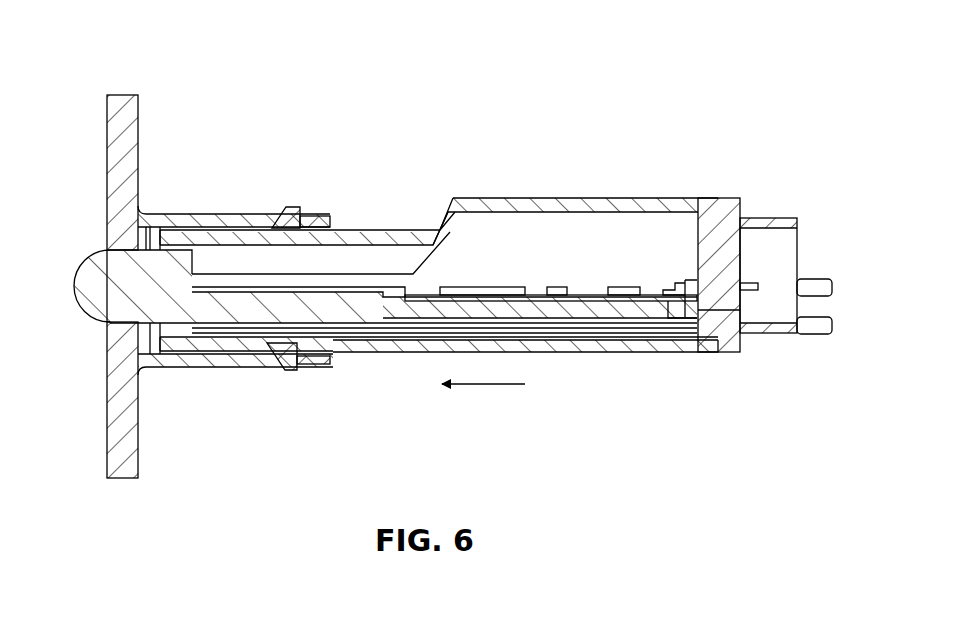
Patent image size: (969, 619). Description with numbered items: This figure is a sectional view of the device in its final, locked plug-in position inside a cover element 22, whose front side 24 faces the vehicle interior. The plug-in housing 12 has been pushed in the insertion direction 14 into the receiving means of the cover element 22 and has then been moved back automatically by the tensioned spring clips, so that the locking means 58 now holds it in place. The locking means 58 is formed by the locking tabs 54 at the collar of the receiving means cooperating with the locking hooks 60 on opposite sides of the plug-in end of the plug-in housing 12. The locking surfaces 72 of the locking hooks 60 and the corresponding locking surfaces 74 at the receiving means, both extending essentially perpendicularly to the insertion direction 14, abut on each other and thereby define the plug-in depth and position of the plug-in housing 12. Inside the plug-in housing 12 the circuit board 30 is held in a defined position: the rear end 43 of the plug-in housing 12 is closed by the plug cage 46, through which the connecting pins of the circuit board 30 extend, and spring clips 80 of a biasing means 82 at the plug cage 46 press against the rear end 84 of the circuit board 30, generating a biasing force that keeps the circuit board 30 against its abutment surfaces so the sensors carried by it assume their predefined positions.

The plug-in housing 12 is at (601, 198).
The insertion direction 14 is at (475, 384).
The cover element 22 is at (130, 443).
The front side 24 is at (100, 428).
The circuit board 30 is at (607, 305).
The rear end 43 is at (710, 150).
The plug cage 46 is at (722, 252).
The locking tabs 54 is at (335, 229).
The locking means 58 is at (223, 214).
The locking hooks 60 is at (285, 208).
The locking surfaces 72 is at (330, 214).
The locking surfaces 74 is at (332, 268).
The spring clips 80 is at (686, 256).
The biasing means 82 is at (700, 312).
The rear end 84 is at (674, 332).